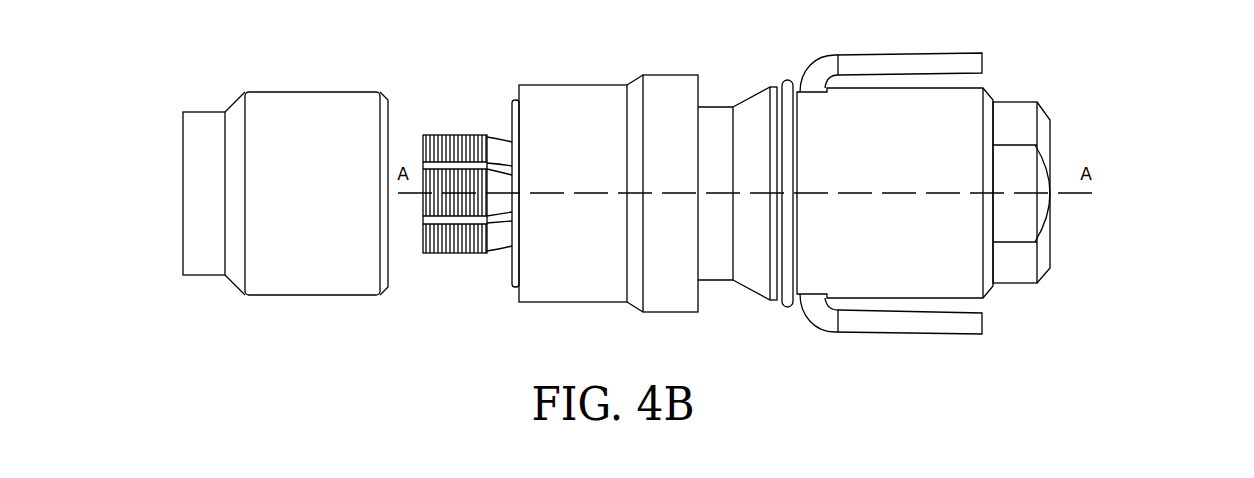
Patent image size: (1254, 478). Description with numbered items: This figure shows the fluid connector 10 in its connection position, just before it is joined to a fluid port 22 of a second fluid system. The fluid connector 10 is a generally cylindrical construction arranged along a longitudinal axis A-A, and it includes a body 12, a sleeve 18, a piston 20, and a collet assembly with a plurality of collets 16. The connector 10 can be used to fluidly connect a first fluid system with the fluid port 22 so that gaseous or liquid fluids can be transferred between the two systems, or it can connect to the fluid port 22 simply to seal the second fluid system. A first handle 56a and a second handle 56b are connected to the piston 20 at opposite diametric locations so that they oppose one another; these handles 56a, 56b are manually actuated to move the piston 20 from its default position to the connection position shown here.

The fluid connector 10 is at (1141, 98).
The body 12 is at (966, 271).
The collets 16 is at (450, 133).
The sleeve 18 is at (665, 78).
The piston 20 is at (1045, 93).
The fluid port 22 is at (313, 84).
The first handle 56a is at (876, 65).
The second handle 56b is at (888, 322).